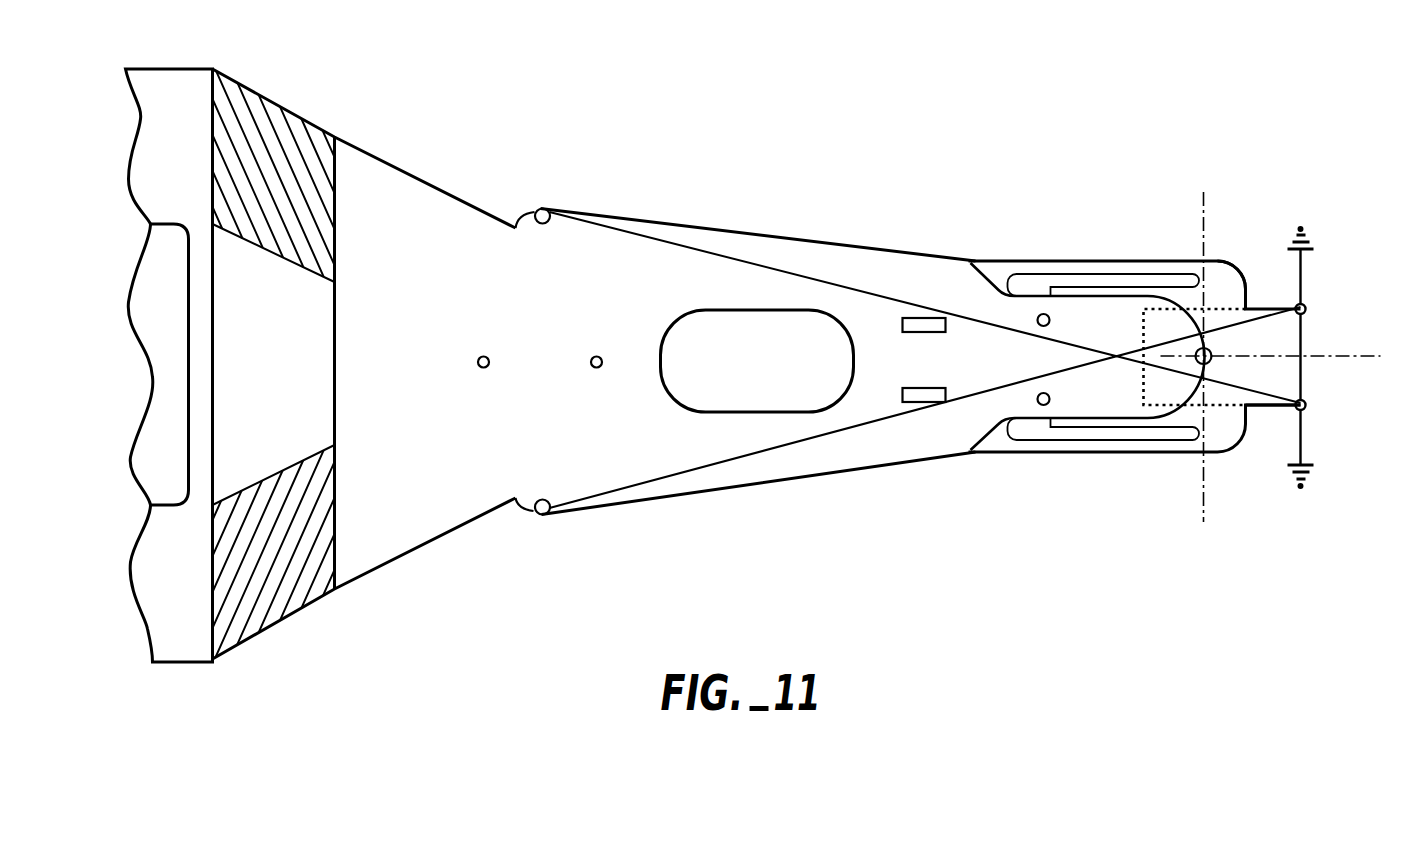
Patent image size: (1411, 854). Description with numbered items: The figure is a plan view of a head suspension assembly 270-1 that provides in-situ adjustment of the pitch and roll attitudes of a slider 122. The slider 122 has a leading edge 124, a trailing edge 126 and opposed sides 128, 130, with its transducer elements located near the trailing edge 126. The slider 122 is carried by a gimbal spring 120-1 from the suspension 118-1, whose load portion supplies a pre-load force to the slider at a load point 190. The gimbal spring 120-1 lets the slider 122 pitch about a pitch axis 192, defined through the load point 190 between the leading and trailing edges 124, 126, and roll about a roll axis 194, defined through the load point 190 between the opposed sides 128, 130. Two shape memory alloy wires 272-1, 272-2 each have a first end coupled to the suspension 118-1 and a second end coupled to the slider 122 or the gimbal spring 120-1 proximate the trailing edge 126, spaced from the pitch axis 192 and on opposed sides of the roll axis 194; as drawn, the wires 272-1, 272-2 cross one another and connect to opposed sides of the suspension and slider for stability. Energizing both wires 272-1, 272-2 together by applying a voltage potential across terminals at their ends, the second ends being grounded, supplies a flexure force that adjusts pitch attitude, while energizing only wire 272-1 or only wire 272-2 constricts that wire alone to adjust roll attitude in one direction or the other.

The head suspension assembly 270-1 is at (774, 205).
The suspension 118-1 is at (950, 371).
The shape memory alloy wire 272-1 is at (965, 320).
The shape memory alloy wire 272-2 is at (918, 410).
The gimbal spring 120-1 is at (1122, 263).
The leading edge 124 is at (1140, 340).
The slider 122 is at (1132, 381).
The pitch axis 192 is at (1203, 508).
The roll axis 194 is at (1325, 354).
The load point 190 is at (1208, 307).
The opposed side 130 is at (1272, 403).
The opposed side 128 is at (1259, 307).
The trailing edge 126 is at (1302, 373).